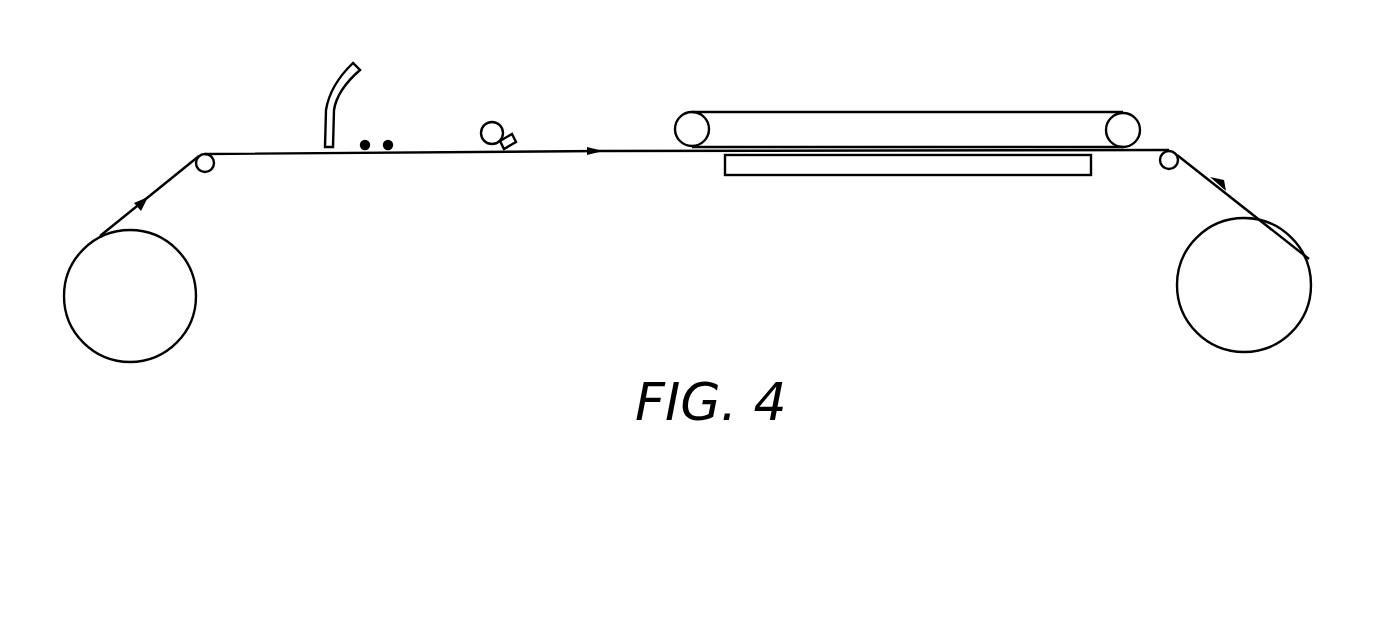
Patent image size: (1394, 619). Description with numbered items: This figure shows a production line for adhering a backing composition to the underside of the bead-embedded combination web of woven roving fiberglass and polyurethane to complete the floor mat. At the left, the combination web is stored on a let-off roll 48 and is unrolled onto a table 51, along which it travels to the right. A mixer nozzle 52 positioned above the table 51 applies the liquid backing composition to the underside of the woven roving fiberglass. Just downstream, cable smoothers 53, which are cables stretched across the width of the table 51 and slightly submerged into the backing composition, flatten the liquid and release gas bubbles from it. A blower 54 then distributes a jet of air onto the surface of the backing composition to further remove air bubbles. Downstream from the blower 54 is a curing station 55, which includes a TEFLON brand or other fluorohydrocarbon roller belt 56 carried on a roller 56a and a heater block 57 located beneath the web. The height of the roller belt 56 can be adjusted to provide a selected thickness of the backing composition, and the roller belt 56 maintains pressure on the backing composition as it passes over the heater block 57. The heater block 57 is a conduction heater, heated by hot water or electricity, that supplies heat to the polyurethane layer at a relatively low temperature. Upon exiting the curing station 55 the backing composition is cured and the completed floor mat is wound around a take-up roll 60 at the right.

The let-off roll 48 is at (157, 313).
The table 51 is at (258, 154).
The mixer nozzle 52 is at (332, 90).
The cable smoothers 53 is at (365, 145).
The blower 54 is at (495, 121).
The curing station 55 is at (893, 119).
The roller belt 56 is at (912, 112).
The belt roller 56a is at (690, 136).
The heater block 57 is at (918, 165).
The take-up roll 60 is at (1278, 283).